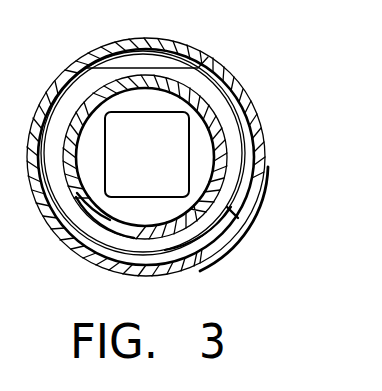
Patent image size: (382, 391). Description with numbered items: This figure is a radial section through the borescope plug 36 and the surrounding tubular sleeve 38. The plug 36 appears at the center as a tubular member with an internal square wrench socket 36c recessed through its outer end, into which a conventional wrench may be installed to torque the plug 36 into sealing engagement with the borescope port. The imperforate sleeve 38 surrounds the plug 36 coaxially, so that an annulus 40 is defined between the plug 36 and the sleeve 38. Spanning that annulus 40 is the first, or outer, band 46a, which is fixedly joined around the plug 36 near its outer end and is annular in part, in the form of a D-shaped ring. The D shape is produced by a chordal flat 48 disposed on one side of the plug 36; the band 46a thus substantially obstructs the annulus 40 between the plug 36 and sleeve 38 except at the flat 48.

The borescope plug 36 is at (233, 169).
The square wrench socket 36c is at (188, 172).
The tubular sleeve 38 is at (223, 63).
The annulus 40 is at (149, 57).
The first band 46a is at (224, 205).
The chordal flat 48 is at (128, 68).